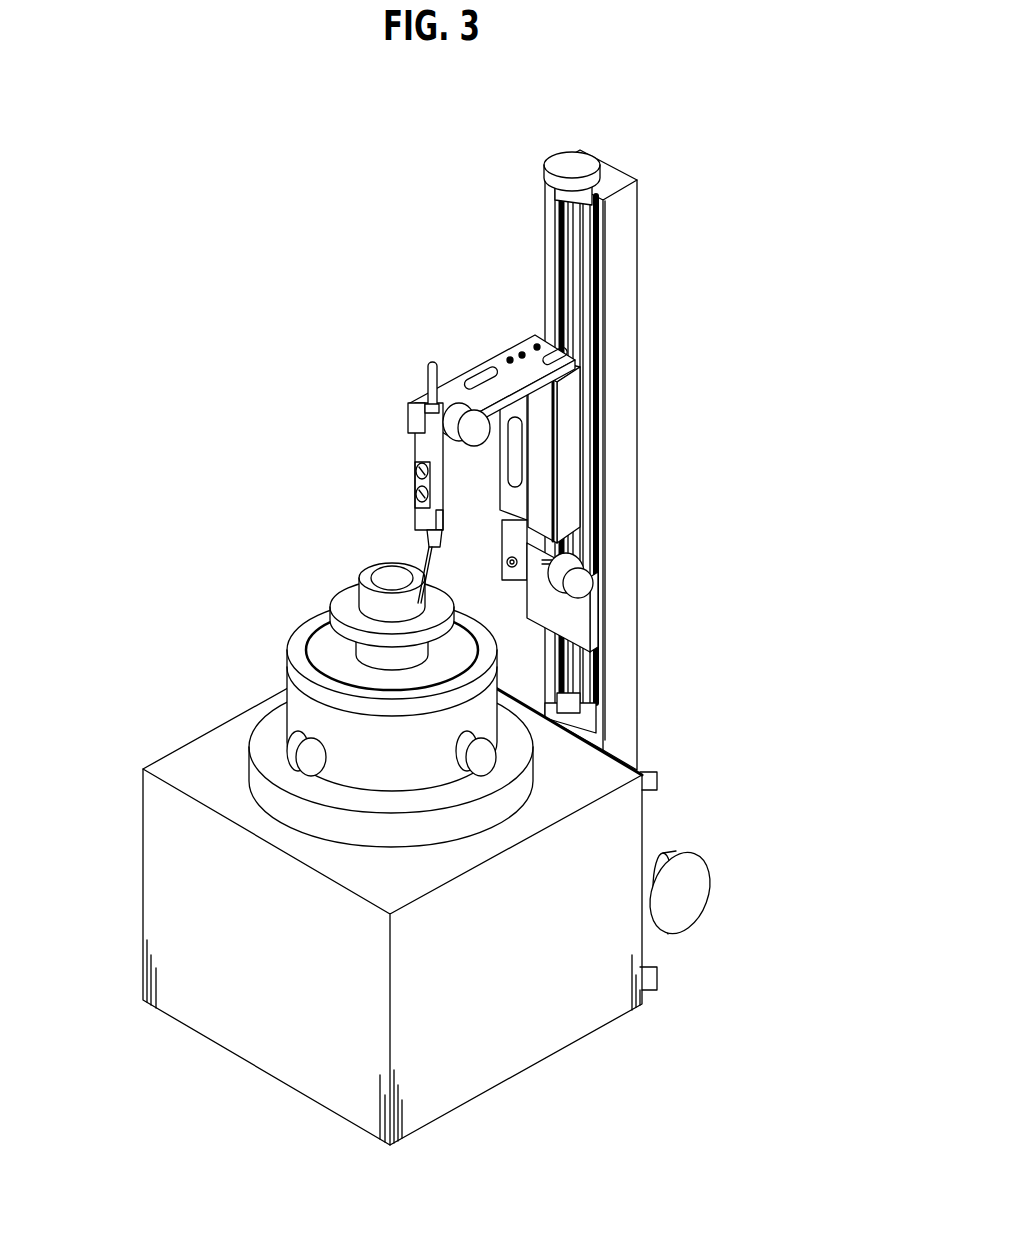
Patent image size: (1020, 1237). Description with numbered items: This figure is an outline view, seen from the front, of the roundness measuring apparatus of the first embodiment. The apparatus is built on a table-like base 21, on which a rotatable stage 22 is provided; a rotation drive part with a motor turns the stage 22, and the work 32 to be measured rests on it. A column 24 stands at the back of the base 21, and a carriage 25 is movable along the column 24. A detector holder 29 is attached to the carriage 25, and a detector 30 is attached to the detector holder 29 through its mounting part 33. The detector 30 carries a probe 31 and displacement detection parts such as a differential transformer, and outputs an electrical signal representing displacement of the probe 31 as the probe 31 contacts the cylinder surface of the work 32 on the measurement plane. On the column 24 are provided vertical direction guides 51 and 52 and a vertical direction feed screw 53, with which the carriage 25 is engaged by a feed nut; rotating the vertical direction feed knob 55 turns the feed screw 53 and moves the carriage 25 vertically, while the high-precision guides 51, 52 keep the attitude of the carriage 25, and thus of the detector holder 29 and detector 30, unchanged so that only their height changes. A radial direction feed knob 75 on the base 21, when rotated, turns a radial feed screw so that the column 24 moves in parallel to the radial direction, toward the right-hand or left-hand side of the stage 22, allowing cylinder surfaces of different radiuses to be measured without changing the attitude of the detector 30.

The base 21 is at (145, 849).
The stage 22 is at (287, 655).
The column 24 is at (637, 392).
The carriage 25 is at (590, 628).
The detector holder 29 is at (507, 353).
The detector 30 is at (414, 482).
The probe 31 is at (426, 574).
The work 32 is at (343, 586).
The mounting part 33 is at (405, 405).
The vertical direction guide 51 is at (547, 292).
The vertical direction guide 52 is at (590, 322).
The vertical direction feed screw 53 is at (571, 258).
The vertical direction feed knob 55 is at (578, 165).
The radial direction feed knob 75 is at (708, 876).